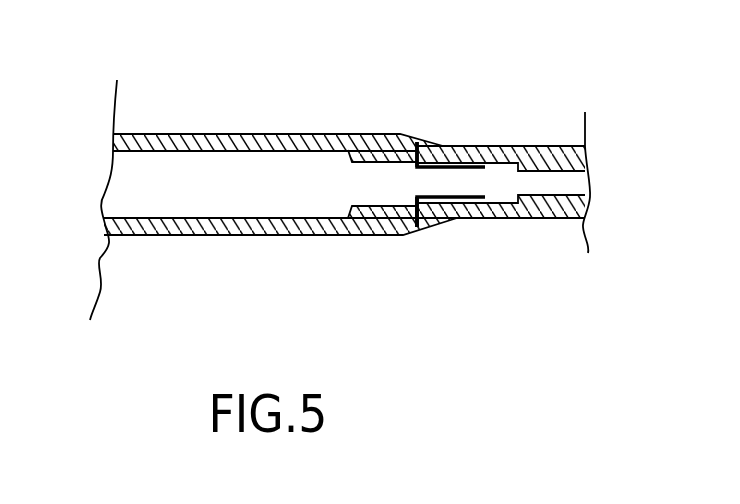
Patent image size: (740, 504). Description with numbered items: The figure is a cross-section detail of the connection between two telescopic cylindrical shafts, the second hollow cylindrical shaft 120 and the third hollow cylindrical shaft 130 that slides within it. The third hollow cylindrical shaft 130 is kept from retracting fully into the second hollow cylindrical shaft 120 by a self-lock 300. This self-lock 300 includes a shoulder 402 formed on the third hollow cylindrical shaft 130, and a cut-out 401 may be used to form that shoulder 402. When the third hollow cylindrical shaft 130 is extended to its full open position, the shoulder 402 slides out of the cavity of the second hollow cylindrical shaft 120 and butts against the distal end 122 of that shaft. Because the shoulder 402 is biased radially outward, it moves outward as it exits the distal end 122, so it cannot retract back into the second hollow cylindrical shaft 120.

The second hollow cylindrical shaft 120 is at (218, 134).
The distal end 122 is at (413, 138).
The third hollow cylindrical shaft 130 is at (515, 146).
The self-lock 300 is at (350, 104).
The cut-out 401 is at (458, 199).
The shoulder 402 is at (441, 221).